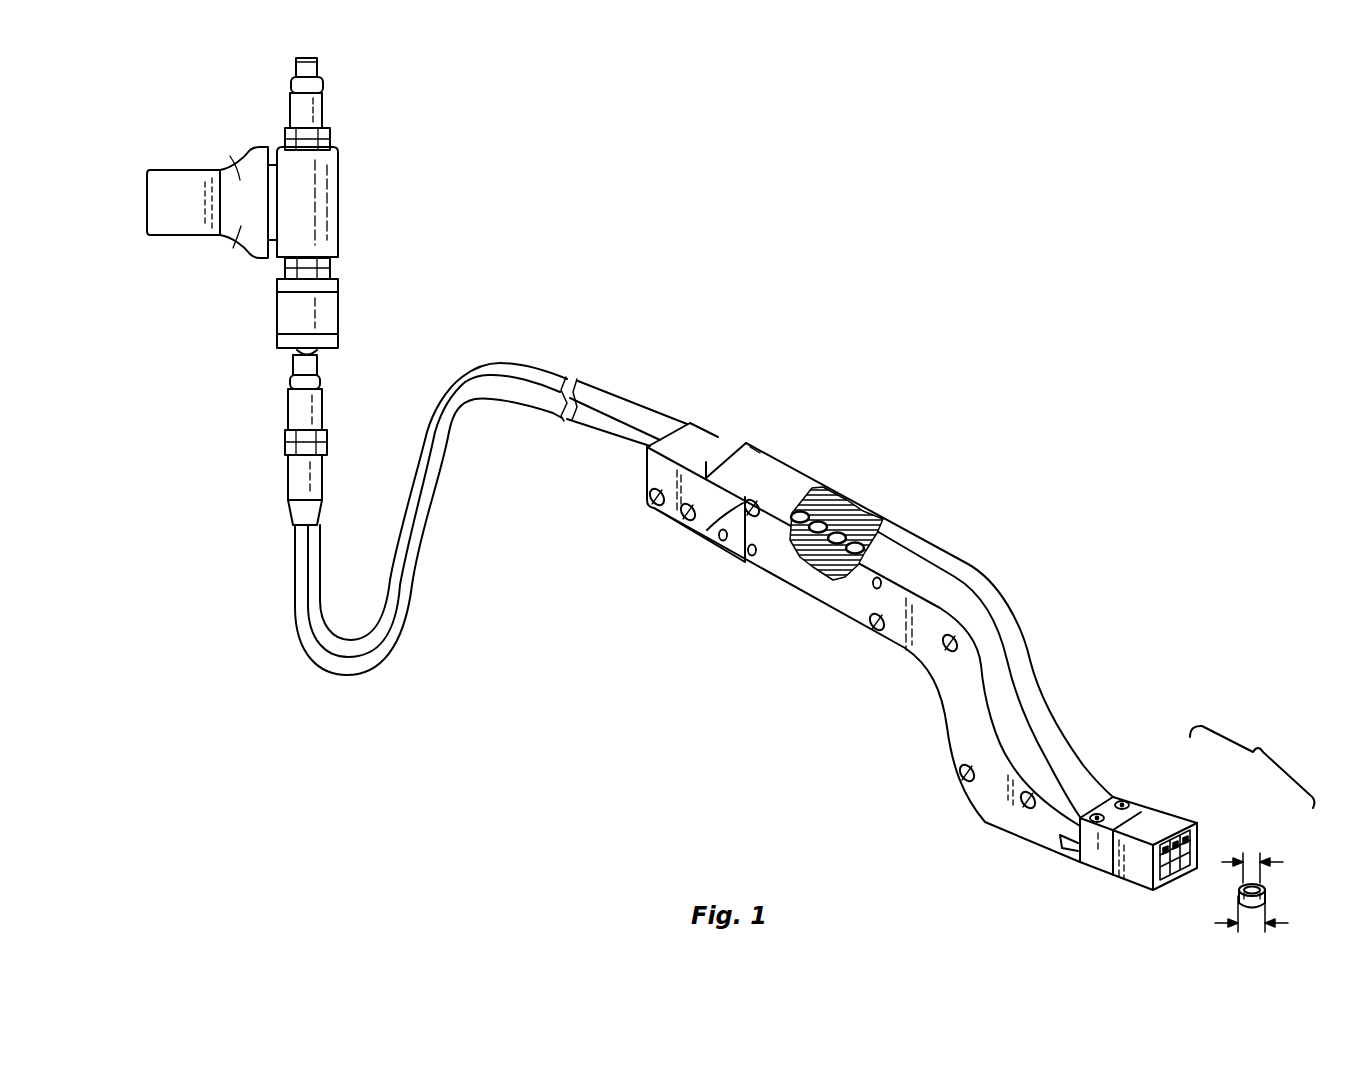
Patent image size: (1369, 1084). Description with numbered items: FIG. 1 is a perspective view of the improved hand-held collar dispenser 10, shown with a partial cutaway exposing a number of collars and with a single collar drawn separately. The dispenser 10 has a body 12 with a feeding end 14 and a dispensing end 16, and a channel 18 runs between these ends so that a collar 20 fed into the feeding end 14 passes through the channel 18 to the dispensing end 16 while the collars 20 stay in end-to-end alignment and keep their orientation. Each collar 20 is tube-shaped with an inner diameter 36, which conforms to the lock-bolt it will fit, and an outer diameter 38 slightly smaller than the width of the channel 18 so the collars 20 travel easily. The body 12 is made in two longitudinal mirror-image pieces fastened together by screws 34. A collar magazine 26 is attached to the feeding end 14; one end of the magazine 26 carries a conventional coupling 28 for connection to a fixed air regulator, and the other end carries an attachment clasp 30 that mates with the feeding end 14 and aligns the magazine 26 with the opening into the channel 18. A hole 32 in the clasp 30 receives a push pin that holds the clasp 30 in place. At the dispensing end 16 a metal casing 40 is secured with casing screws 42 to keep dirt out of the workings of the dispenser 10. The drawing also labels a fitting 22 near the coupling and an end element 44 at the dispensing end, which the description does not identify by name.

The hand-held collar dispenser 10 is at (978, 440).
The body 12 is at (941, 562).
The feeding end 14 is at (768, 463).
The dispensing end 16 is at (1185, 823).
The channel 18 is at (838, 501).
The collar 20 is at (862, 532).
The fitting / valve body 22 is at (323, 193).
The collar magazine 26 is at (605, 397).
The coupling 28 is at (302, 478).
The attachment clasp 30 is at (704, 437).
The hole 32 is at (718, 540).
The screws 34 is at (685, 520).
The inner diameter 36 is at (1253, 850).
The outer diameter 38 is at (1252, 932).
The metal casing 40 is at (1143, 810).
The casing screws 42 is at (1098, 813).
The end connector 44 is at (1194, 878).